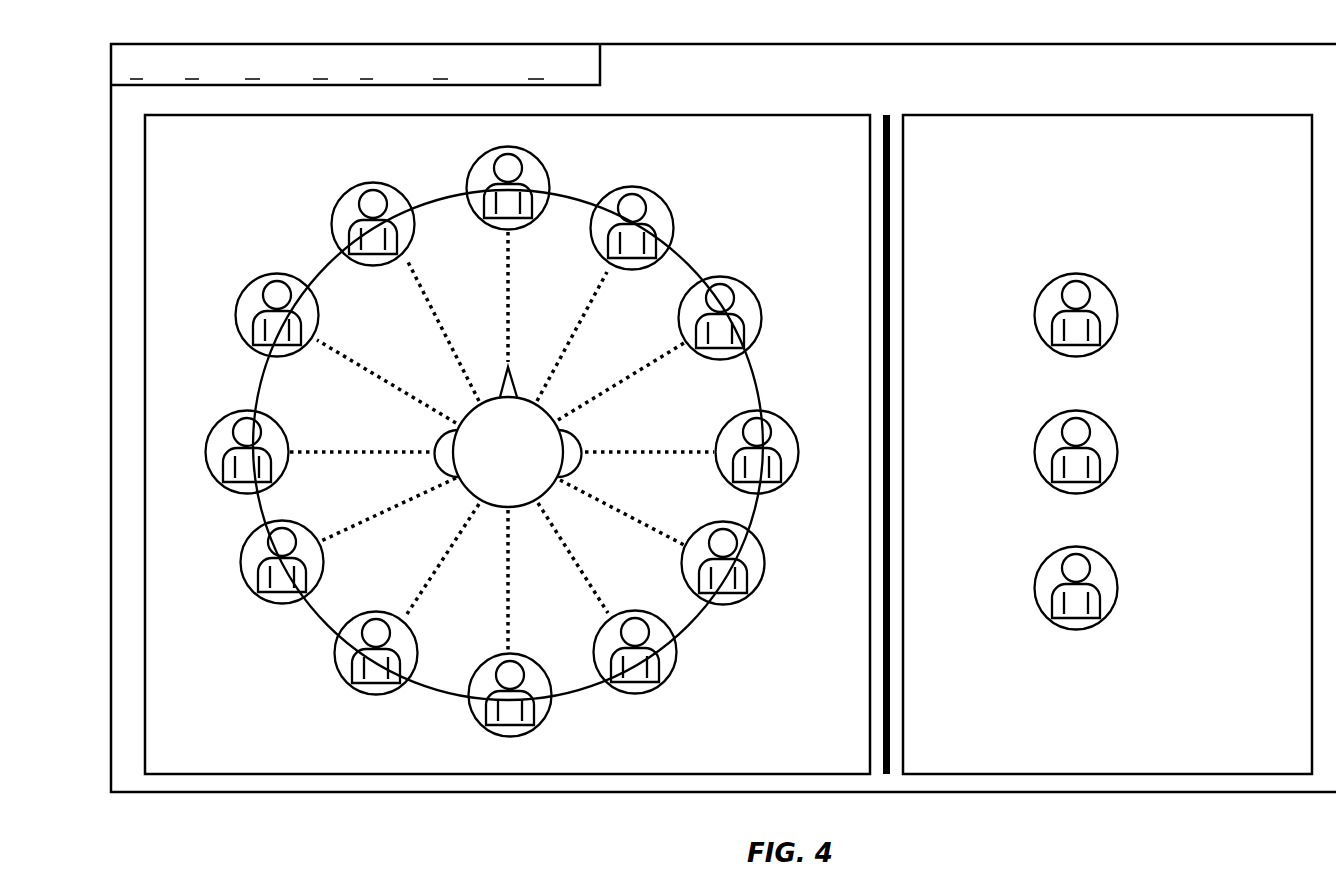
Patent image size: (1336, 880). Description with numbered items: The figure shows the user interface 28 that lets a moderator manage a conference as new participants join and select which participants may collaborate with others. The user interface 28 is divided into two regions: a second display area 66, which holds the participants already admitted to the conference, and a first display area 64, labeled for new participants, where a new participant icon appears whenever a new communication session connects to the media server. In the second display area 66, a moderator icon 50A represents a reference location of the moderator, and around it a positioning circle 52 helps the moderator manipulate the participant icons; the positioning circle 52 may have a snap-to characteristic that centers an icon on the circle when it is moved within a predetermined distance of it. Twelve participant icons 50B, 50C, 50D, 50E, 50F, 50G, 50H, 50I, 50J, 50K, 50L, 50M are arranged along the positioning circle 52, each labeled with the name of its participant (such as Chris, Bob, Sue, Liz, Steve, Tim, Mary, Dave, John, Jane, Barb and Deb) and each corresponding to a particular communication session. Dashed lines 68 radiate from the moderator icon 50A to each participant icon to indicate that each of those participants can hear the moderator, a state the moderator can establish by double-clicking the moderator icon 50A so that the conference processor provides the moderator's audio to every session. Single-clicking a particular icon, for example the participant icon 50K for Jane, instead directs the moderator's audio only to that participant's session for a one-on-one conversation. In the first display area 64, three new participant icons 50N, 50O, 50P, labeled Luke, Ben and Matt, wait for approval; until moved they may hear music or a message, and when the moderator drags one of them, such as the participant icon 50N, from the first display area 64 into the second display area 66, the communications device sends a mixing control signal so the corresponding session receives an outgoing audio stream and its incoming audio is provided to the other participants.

The user interface 28 is at (1143, 44).
The second display area 66 is at (842, 155).
The first display area 64 is at (1288, 155).
The positioning circle 52 is at (565, 200).
The dashed lines 68 is at (588, 300).
The moderator icon 50A is at (518, 508).
The participant icon 50B is at (547, 170).
The participant icon 50C is at (675, 228).
The participant icon 50D is at (755, 347).
The participant icon 50E is at (782, 415).
The participant icon 50F is at (763, 547).
The participant icon 50G is at (677, 657).
The participant icon 50H is at (545, 720).
The participant icon 50I is at (383, 696).
The participant icon 50J is at (277, 605).
The participant icon 50K is at (250, 408).
The participant icon 50L is at (282, 274).
The participant icon 50M is at (368, 183).
The participant icon 50N is at (1107, 282).
The participant icon 50O is at (1107, 420).
The participant icon 50P is at (1107, 556).